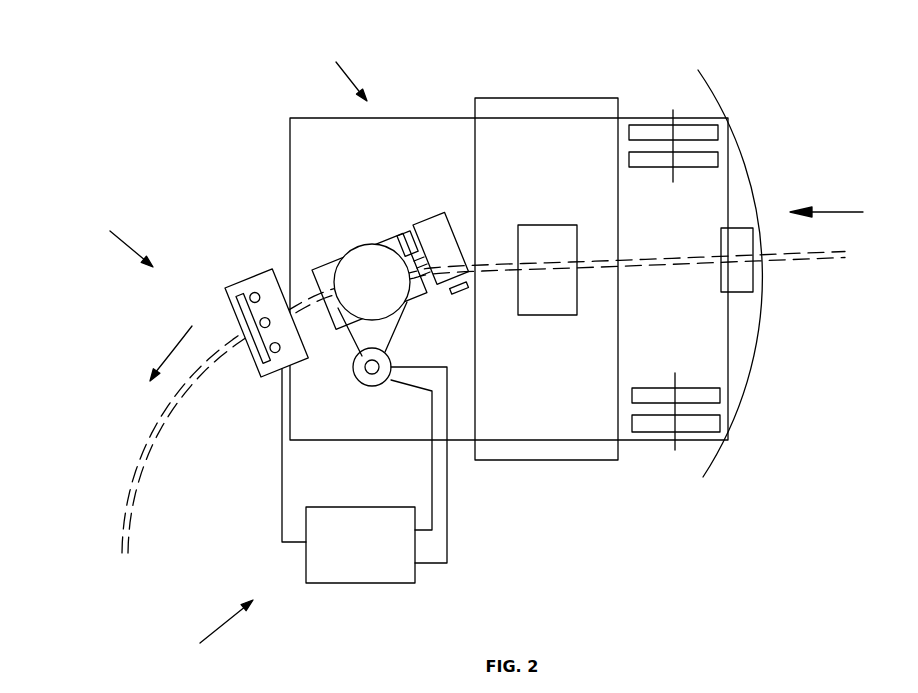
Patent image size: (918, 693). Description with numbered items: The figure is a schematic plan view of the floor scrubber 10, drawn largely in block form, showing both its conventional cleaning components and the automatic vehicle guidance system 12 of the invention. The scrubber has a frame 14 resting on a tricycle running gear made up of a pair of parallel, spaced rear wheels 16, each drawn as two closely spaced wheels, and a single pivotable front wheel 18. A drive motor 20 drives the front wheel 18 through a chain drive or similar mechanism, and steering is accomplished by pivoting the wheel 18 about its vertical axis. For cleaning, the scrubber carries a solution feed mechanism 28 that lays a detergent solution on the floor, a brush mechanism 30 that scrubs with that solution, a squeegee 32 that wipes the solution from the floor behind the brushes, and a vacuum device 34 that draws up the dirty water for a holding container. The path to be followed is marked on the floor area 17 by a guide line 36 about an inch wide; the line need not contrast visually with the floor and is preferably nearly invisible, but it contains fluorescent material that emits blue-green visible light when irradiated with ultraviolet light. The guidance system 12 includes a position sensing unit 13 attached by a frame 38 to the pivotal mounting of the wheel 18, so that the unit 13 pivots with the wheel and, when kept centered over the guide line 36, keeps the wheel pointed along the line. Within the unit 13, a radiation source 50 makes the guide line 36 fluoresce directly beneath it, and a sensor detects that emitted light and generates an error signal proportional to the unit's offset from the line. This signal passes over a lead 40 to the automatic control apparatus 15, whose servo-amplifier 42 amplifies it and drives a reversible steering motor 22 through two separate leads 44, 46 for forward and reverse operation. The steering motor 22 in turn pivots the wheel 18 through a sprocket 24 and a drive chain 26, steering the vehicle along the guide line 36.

The floor scrubber 10 is at (339, 71).
The automatic vehicle guidance system 12 is at (120, 237).
The position sensing unit 13 is at (252, 275).
The frame 14 is at (290, 147).
The automatic control apparatus 15 is at (213, 630).
The rear wheels 16 is at (712, 130).
The floor area 17 is at (78, 367).
The pivotable front wheel 18 is at (397, 233).
The drive motor 20 is at (438, 220).
The reversible steering motor 22 is at (360, 384).
The sprocket 24 is at (402, 298).
The drive chain 26 is at (397, 335).
The solution feed mechanism 28 is at (548, 233).
The brush mechanism 30 is at (505, 98).
The squeegee 32 is at (760, 342).
The vacuum device 34 is at (730, 285).
The guide line 36 is at (133, 495).
The frame 38 is at (302, 287).
The lead 40 is at (280, 485).
The servo-amplifier 42 is at (355, 583).
The lead 44 is at (432, 502).
The lead 46 is at (447, 540).
The radiation source 50 is at (245, 305).